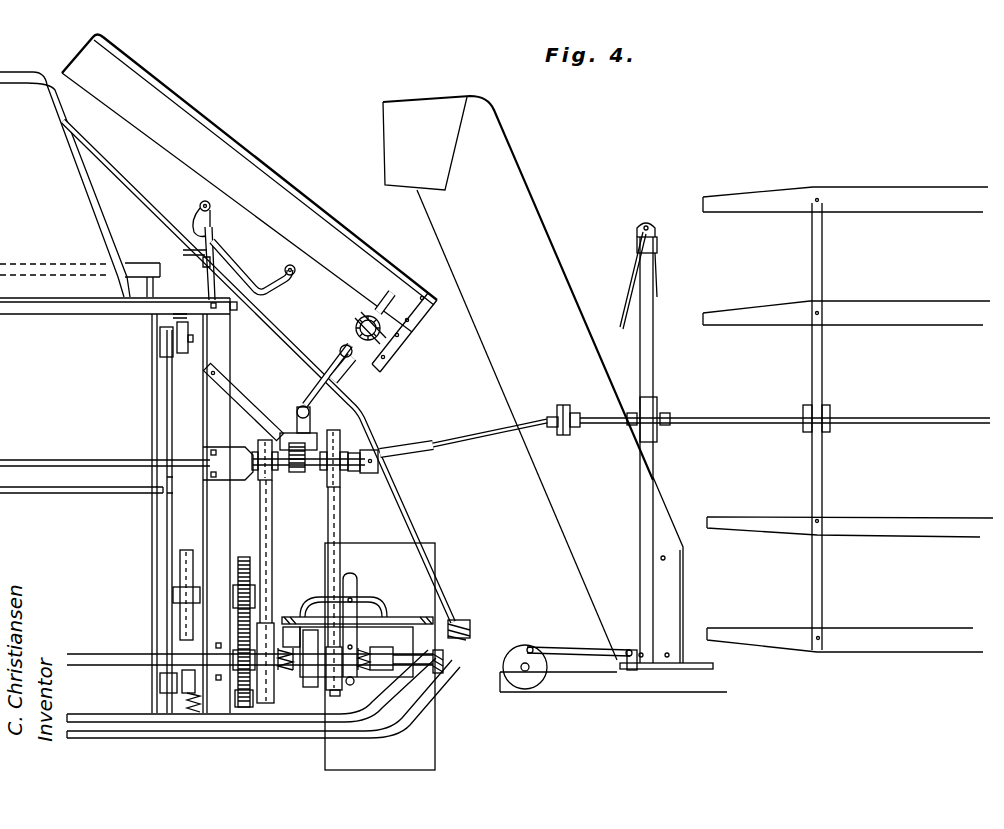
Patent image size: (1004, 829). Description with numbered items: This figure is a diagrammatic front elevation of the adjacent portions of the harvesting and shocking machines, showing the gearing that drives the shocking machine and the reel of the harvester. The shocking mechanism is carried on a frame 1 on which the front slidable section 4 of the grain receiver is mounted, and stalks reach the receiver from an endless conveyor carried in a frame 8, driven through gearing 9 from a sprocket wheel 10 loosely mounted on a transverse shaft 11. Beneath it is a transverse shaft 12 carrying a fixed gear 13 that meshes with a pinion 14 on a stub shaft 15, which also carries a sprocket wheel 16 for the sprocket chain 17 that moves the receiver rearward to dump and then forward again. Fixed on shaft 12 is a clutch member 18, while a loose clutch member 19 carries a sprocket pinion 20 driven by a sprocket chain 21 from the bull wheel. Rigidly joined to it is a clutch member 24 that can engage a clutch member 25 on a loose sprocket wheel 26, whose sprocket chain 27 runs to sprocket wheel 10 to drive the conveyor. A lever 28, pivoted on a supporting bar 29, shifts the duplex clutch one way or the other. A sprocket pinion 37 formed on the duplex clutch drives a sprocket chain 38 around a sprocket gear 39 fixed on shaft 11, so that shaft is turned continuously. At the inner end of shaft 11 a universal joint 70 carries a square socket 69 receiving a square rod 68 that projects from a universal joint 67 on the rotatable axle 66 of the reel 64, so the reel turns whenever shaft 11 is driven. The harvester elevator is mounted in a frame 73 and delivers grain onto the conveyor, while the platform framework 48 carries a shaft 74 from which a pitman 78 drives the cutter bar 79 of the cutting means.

The frame 1 is at (150, 737).
The front slidable section 4 is at (118, 505).
The conveyor frame 8 is at (249, 204).
The gearing 9 is at (358, 318).
The sprocket wheel 10 is at (280, 440).
The transverse shaft 11 is at (100, 454).
The transverse shaft 12 is at (452, 676).
The gear 13 is at (243, 708).
The pinion 14 is at (243, 556).
The stub shaft 15 is at (236, 596).
The sprocket wheel 16 is at (201, 543).
The sprocket chain 17 is at (197, 556).
The clutch member 18 is at (396, 668).
The clutch member 19 is at (390, 672).
The sprocket pinion 20 is at (334, 684).
The sprocket chain 21 is at (338, 697).
The clutch member 24 is at (315, 689).
The clutch member 25 is at (285, 672).
The sprocket wheel 26 is at (262, 704).
The sprocket chain 27 is at (283, 553).
The lever 28 is at (358, 590).
The supporting bar 29 is at (398, 592).
The sprocket pinion 37 is at (375, 706).
The sprocket chain 38 is at (327, 508).
The sprocket gear 39 is at (342, 488).
The platform framework 48 is at (705, 694).
The reel 64 is at (787, 324).
The rotatable axle 66 is at (610, 428).
The universal joint 67 is at (561, 437).
The square rod 68 is at (468, 447).
The socket 69 is at (416, 452).
The universal joint 70 is at (352, 473).
The elevator frame 73 is at (518, 378).
The shaft 74 is at (527, 680).
The pitman 78 is at (578, 674).
The cutter bar 79 is at (666, 670).